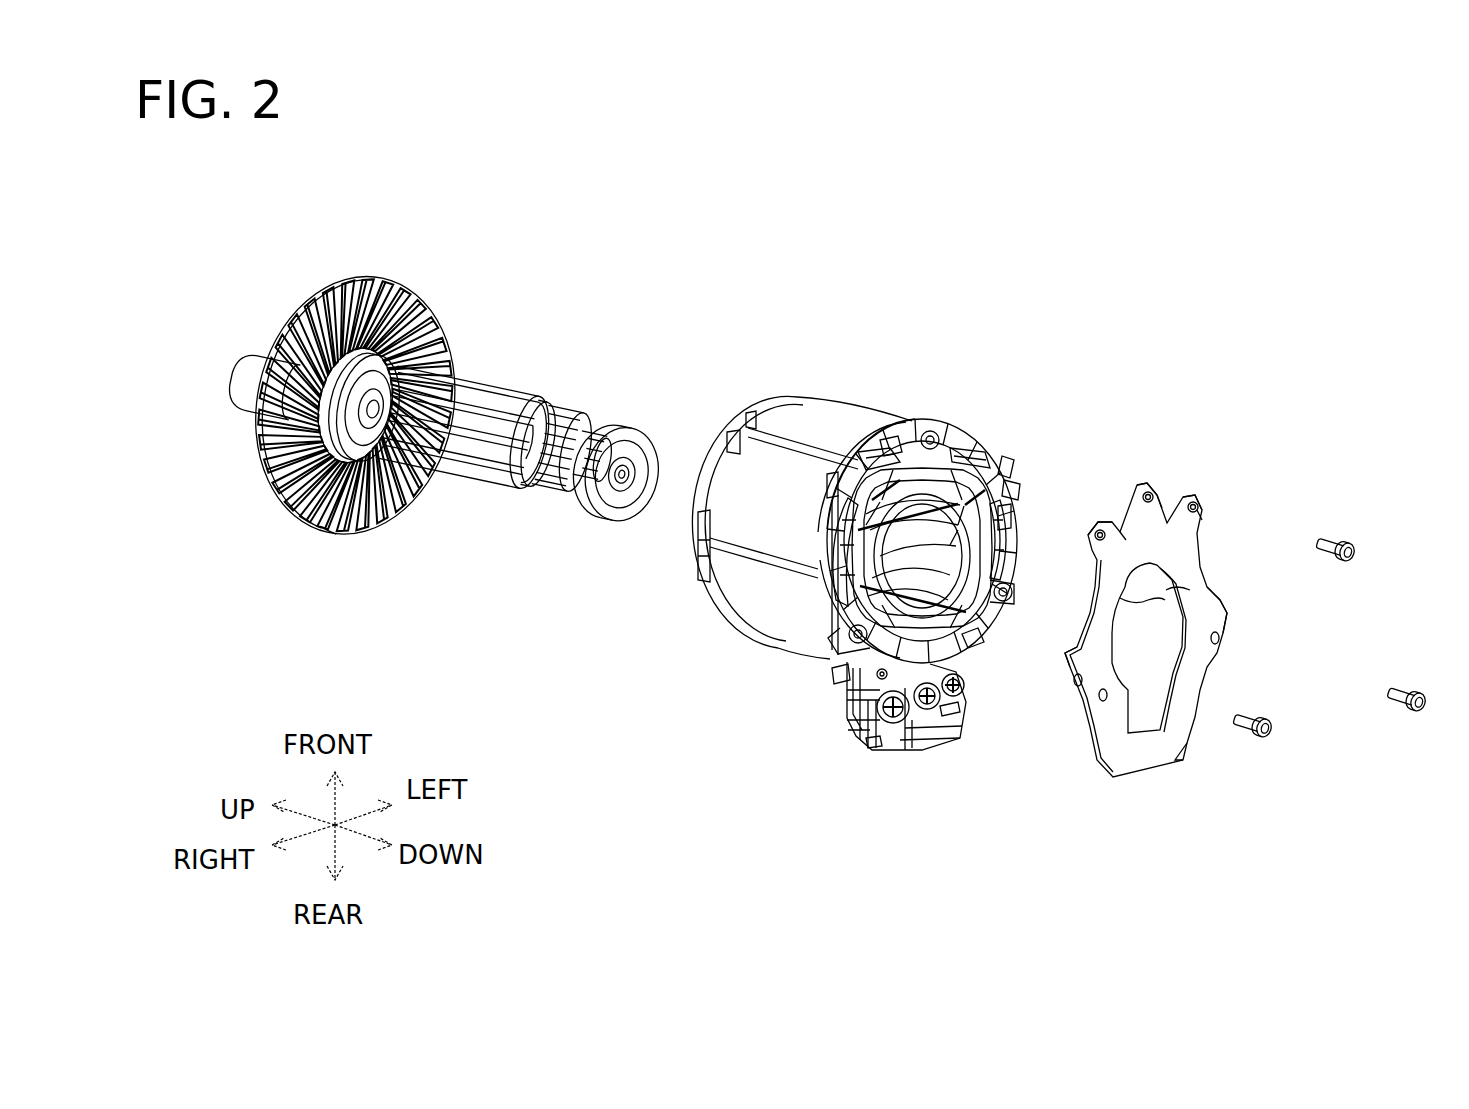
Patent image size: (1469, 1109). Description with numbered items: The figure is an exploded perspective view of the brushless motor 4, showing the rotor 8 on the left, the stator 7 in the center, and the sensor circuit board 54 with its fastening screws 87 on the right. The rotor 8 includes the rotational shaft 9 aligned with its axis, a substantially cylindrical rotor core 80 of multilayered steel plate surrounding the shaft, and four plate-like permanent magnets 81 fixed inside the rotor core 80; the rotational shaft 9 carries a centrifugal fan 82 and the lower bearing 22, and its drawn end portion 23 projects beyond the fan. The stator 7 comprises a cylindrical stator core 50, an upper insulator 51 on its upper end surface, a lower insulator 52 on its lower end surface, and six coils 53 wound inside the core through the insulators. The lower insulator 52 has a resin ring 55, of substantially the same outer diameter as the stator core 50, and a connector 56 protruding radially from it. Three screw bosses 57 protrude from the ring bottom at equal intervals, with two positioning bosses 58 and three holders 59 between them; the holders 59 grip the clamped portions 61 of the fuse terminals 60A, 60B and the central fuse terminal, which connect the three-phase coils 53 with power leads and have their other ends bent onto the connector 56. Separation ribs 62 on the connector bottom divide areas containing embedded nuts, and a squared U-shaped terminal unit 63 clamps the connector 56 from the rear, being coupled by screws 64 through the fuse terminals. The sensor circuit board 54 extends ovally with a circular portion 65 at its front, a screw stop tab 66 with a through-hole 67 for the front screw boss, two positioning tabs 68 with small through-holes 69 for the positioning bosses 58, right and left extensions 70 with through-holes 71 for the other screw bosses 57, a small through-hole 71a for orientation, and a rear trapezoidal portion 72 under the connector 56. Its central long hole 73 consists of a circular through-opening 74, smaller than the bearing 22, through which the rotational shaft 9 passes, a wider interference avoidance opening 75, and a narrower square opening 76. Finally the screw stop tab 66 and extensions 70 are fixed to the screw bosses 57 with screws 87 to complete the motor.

The brushless motor 4 is at (851, 252).
The stator 7 is at (908, 352).
The rotor 8 is at (519, 355).
The rotational shaft 9 is at (328, 530).
The lower bearing 22 is at (616, 472).
The output shaft 23 is at (262, 386).
The stator core 50 is at (853, 585).
The upper insulator 51 is at (698, 552).
The lower insulator 52 is at (960, 430).
The coils 53 is at (892, 440).
The sensor circuit board 54 is at (1153, 620).
The ring 55 is at (862, 466).
The connector 56 is at (901, 751).
The screw bosses 57 is at (918, 432).
The positioning bosses 58 is at (858, 452).
The holders 59 is at (832, 492).
The fuse terminal 60A is at (830, 592).
The fuse terminal 60B is at (1014, 516).
The clamped portion 61 is at (826, 512).
The separation ribs 62 is at (893, 756).
The terminal unit 63 is at (862, 748).
The screws 64 is at (956, 696).
The circular portion 65 is at (1088, 586).
The screw stop tab 66 is at (1158, 453).
The through-hole 67 is at (1152, 490).
The positioning tabs 68 is at (1137, 495).
The small through-holes 69 is at (1198, 508).
The extensions 70 is at (1226, 612).
The through-holes 71 is at (1163, 729).
The small through-hole 71a is at (1102, 702).
The trapezoidal portion 72 is at (1154, 770).
The long hole 73 is at (1206, 590).
The through-opening 74 is at (1120, 600).
The interference avoidance opening 75 is at (1187, 652).
The square opening 76 is at (1185, 762).
The rotor core 80 is at (467, 429).
The permanent magnets 81 is at (567, 450).
The centrifugal fan 82 is at (355, 405).
The screws 87 is at (1332, 542).